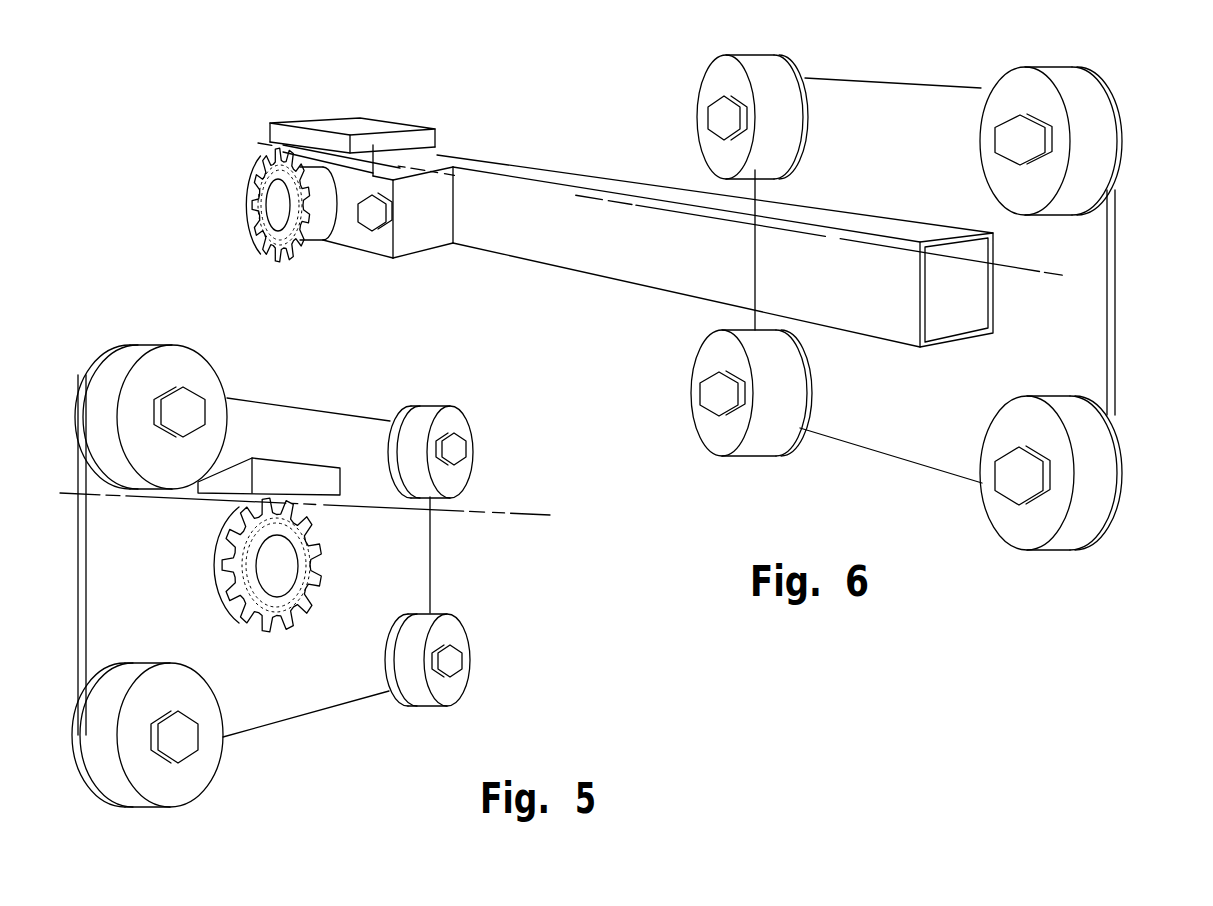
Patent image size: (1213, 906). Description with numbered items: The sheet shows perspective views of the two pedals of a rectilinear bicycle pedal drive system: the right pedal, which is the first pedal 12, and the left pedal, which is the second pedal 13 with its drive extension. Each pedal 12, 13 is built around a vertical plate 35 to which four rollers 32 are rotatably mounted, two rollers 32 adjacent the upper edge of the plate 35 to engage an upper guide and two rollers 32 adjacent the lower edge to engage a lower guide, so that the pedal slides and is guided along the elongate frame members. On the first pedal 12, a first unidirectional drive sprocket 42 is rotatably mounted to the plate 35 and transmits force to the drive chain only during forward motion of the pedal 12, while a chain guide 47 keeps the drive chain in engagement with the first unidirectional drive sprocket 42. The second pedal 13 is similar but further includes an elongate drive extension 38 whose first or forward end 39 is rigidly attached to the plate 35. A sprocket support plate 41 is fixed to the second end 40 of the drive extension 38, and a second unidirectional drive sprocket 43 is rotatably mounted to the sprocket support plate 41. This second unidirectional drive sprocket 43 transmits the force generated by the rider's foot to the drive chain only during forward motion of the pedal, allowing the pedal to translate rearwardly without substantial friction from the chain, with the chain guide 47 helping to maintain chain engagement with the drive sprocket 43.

In FIG. 5, the first pedal 12 is at (522, 592).
In FIG. 6, the second pedal 13 is at (1130, 99).
In FIG. 5, the rollers 32 is at (182, 362).
In FIG. 6, the rollers 32 is at (712, 88).
In FIG. 5, the vertical plate 35 is at (430, 585).
In FIG. 6, the drive extension 38 is at (800, 257).
In FIG. 6, the first or forward end 39 is at (972, 291).
In FIG. 6, the second end 40 is at (427, 105).
In FIG. 6, the sprocket support plate 41 is at (415, 242).
In FIG. 5, the first unidirectional drive sprocket 42 is at (267, 632).
In FIG. 6, the second unidirectional drive sprocket 43 is at (270, 258).
In FIG. 5, the chain guide 47 is at (283, 470).
In FIG. 6, the chain guide 47 is at (327, 125).